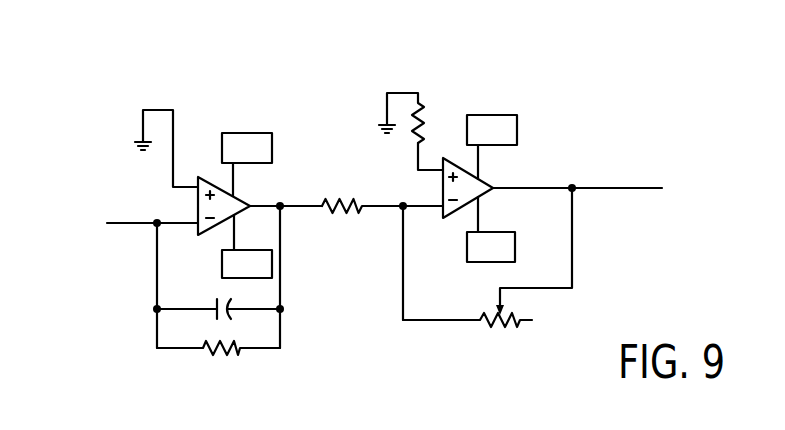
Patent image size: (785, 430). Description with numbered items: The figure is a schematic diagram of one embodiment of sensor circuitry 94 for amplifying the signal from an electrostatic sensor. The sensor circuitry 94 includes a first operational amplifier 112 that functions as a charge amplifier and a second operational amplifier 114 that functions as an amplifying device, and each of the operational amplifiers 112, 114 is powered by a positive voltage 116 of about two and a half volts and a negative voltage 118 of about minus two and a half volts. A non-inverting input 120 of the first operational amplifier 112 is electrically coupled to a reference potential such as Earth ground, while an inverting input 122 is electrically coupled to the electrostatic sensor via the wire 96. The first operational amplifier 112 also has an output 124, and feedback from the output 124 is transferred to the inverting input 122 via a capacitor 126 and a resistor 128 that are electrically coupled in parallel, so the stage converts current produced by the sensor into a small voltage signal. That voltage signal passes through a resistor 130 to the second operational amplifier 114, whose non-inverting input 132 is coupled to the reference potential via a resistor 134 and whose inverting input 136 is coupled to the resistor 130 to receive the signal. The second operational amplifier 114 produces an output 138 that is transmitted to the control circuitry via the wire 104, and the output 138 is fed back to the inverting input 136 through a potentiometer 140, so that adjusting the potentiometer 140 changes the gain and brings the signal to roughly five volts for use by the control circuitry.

The sensor circuitry 94 is at (250, 58).
The wire 96 is at (126, 222).
The wire 104 is at (623, 187).
The first operational amplifier 112 is at (210, 177).
The second operational amplifier 114 is at (460, 158).
The positive voltage 116 is at (273, 143).
The negative voltage 118 is at (262, 280).
The non-inverting input 120 is at (187, 186).
The inverting input 122 is at (177, 226).
The output 124 is at (262, 205).
The capacitor 126 is at (213, 313).
The resistor 128 is at (230, 353).
The resistor 130 is at (353, 210).
The non-inverting input 132 is at (433, 169).
The resistor 134 is at (420, 135).
The inverting input 136 is at (422, 208).
The output 138 is at (522, 187).
The potentiometer 140 is at (495, 326).